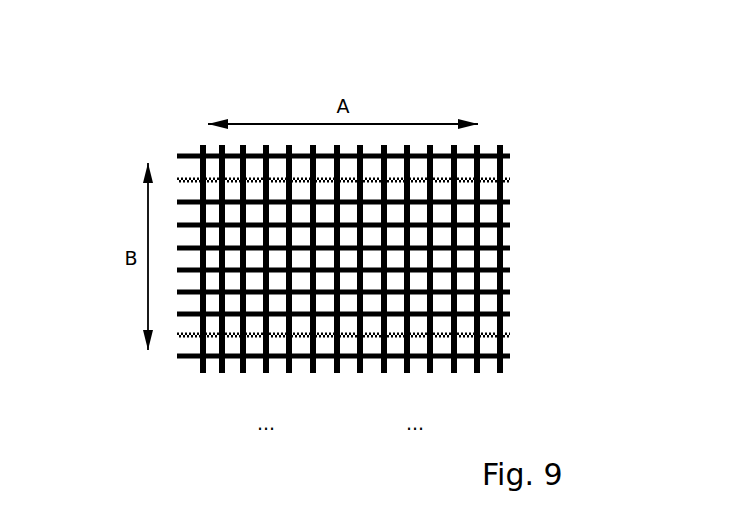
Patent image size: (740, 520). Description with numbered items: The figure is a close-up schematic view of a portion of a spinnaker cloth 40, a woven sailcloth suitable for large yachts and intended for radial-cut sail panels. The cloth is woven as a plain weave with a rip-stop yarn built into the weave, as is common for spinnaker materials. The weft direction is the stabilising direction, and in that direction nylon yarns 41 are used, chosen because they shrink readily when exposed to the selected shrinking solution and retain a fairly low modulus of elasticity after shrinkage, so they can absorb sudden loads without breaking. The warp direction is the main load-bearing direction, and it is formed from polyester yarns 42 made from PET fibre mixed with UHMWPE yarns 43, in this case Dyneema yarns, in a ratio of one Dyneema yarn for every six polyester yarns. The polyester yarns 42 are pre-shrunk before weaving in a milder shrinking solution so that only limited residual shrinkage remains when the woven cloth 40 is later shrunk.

The spinnaker cloth 40 is at (184, 124).
The nylon yarns 41 is at (203, 373).
The polyester yarns 42 is at (510, 156).
The UHMWPE yarns 43 is at (510, 180).